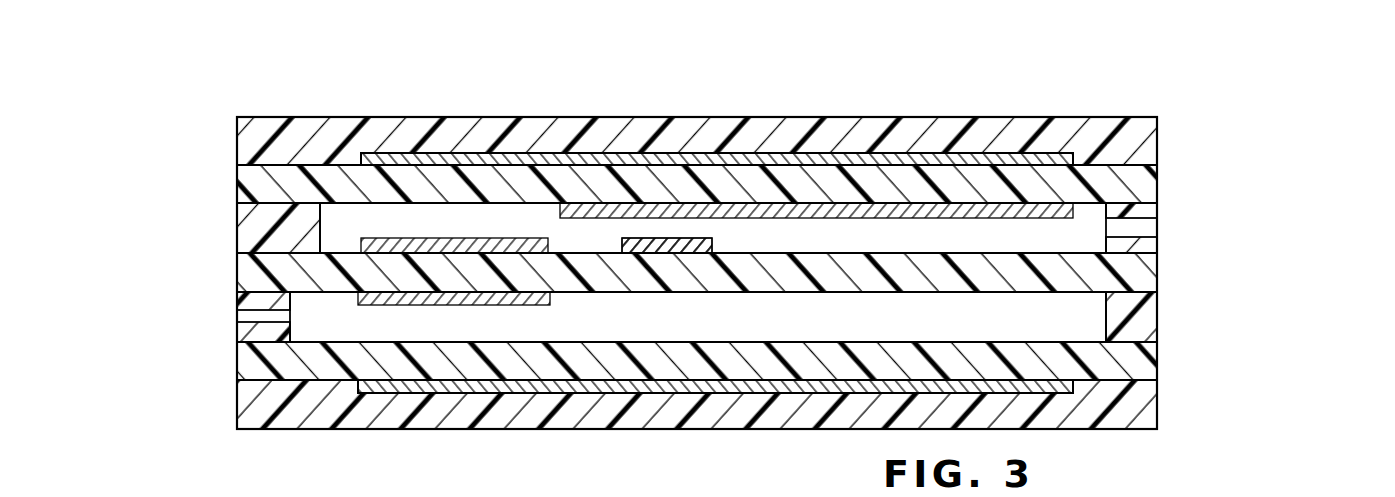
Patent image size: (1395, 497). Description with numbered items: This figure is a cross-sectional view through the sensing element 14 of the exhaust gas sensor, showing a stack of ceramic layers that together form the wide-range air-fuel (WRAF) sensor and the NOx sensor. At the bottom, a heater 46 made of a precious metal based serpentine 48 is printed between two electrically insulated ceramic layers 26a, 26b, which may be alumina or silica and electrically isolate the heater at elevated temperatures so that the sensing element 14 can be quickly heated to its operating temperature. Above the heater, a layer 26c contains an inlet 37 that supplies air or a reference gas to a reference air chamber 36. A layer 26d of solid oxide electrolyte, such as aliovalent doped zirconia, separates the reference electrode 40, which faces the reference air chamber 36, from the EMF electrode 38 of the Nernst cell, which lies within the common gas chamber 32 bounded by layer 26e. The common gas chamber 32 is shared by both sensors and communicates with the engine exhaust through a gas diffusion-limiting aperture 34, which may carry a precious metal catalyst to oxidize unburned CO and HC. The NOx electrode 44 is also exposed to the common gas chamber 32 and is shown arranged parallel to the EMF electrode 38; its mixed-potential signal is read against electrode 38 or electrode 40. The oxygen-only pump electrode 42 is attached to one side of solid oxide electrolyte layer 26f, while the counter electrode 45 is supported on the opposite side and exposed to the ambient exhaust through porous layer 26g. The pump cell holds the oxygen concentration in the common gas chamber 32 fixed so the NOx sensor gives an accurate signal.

The sensing element 14 is at (150, 112).
The electrically insulated ceramic layer 26a is at (1157, 405).
The electrically insulated ceramic layer 26b is at (1157, 362).
The layer 26c is at (1157, 316).
The layer of solid oxide electrolyte 26d is at (1157, 282).
The layer 26e is at (1157, 245).
The solid oxide electrolyte layer 26f is at (1150, 177).
The porous layer 26g is at (1157, 113).
The common gas chamber 32 is at (346, 223).
The gas diffusion-limiting aperture 34 is at (1158, 232).
The reference air chamber 36 is at (1049, 326).
The inlet 37 is at (252, 312).
The EMF electrode 38 is at (710, 231).
The reference electrode 40 is at (523, 305).
The oxygen-only pump electrode 42 is at (879, 198).
The NOx electrode 44 is at (628, 247).
The counter electrode 45 is at (475, 157).
The heater 46 is at (353, 393).
The precious metal based serpentine 48 is at (407, 392).